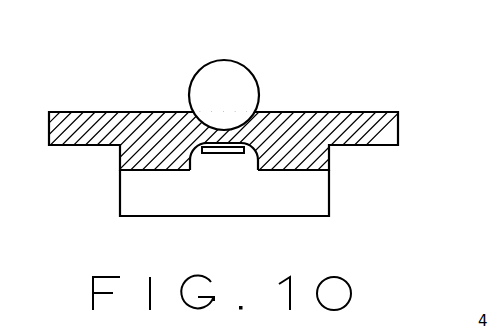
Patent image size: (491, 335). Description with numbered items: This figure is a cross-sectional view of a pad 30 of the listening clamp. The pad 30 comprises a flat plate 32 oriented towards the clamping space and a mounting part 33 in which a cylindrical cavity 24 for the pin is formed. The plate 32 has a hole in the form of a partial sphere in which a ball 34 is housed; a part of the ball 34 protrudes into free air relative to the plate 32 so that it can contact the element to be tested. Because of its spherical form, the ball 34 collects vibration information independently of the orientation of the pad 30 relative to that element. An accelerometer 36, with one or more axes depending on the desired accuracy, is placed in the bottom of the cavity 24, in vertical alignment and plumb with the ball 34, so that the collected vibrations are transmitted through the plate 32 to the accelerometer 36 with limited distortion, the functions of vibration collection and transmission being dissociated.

The pad 30 is at (366, 174).
The flat plate 32 is at (399, 129).
The mounting part 33 is at (120, 191).
The ball 34 is at (223, 90).
The cylindrical cavity 24 is at (218, 162).
The accelerometer 36 is at (238, 143).